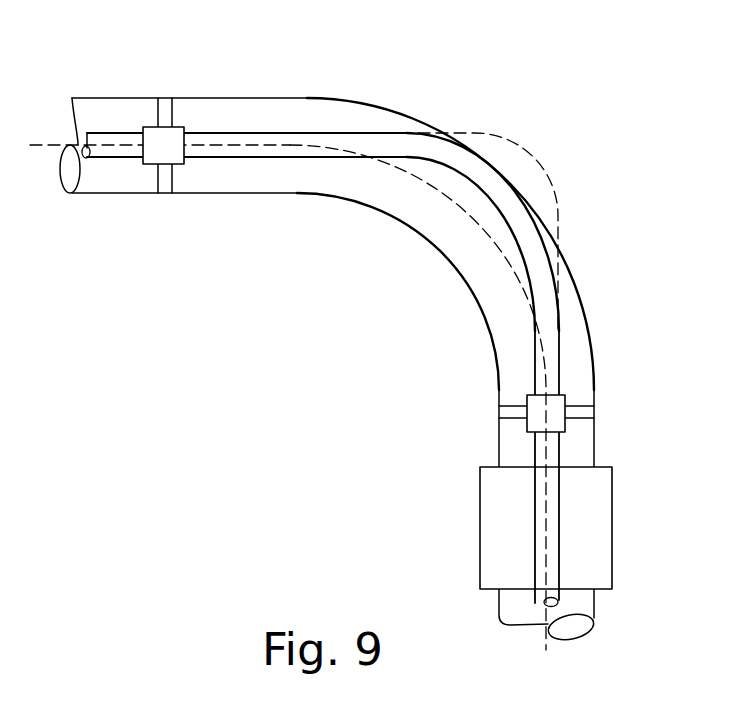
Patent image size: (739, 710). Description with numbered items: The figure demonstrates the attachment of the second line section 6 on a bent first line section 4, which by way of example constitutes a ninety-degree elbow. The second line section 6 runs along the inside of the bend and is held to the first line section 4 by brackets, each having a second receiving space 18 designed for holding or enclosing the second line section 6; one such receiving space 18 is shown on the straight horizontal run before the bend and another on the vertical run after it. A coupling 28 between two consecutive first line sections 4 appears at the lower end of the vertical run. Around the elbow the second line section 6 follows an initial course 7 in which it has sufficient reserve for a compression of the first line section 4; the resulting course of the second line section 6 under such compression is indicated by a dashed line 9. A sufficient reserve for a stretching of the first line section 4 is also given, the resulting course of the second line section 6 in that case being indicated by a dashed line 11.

The first line section 4 is at (252, 118).
The second line section 6 is at (257, 145).
The initial course 7 is at (540, 232).
The dashed line 9 is at (526, 148).
The dashed line 11 is at (478, 235).
The second receiving space 18 is at (152, 142).
The coupling 28 is at (490, 538).